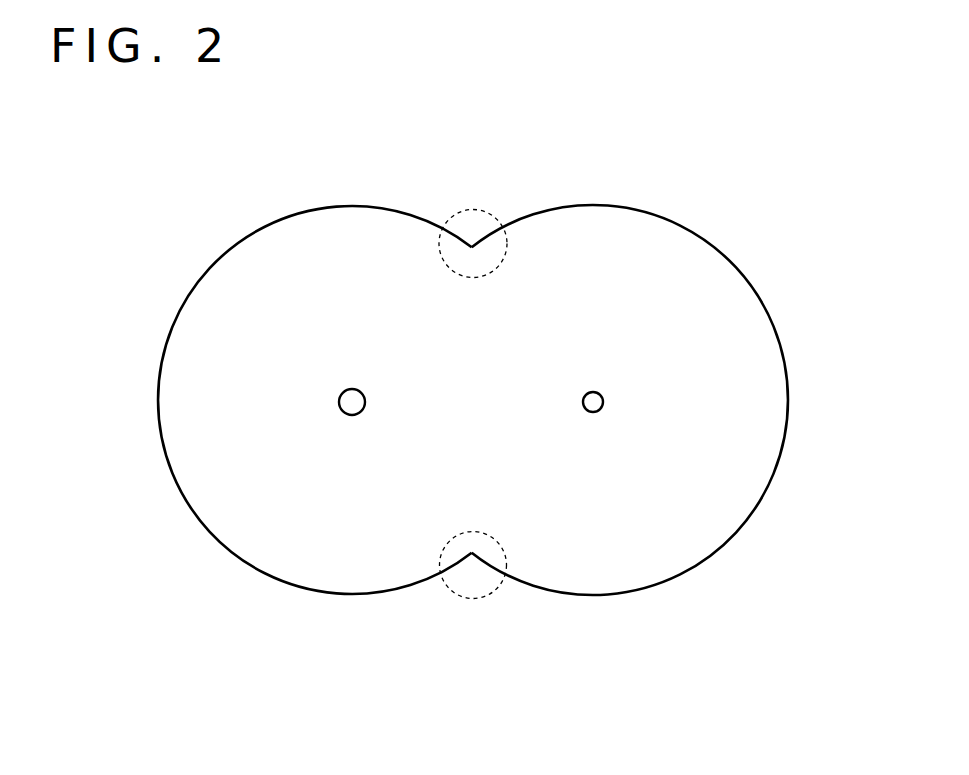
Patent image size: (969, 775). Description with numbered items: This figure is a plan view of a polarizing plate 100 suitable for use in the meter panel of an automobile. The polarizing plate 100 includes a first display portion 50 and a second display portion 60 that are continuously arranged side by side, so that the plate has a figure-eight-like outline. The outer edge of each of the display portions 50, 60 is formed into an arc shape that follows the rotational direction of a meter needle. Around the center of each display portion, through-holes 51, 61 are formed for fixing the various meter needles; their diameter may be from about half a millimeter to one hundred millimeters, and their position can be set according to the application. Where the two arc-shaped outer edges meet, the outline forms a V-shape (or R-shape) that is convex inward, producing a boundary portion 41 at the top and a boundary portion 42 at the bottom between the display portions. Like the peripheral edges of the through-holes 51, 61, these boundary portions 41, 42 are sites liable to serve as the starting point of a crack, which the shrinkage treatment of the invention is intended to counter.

The polarizing plate 100 is at (808, 204).
The first display portion 50 is at (213, 358).
The second display portion 60 is at (729, 323).
The through-hole 51 is at (343, 391).
The through-hole 61 is at (600, 410).
The boundary portion 41 is at (472, 246).
The boundary portion 42 is at (473, 555).